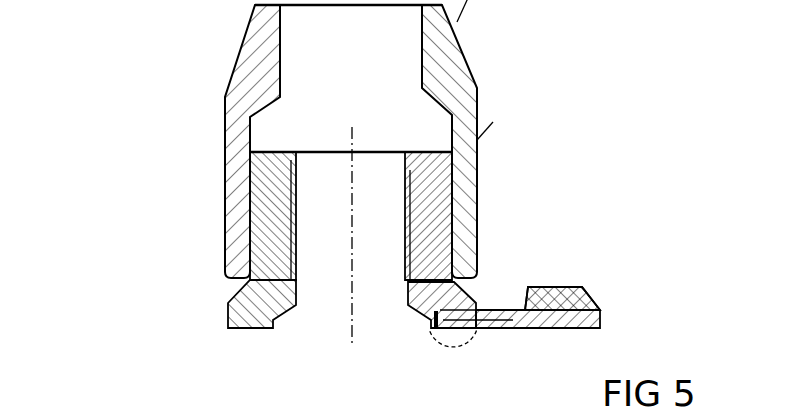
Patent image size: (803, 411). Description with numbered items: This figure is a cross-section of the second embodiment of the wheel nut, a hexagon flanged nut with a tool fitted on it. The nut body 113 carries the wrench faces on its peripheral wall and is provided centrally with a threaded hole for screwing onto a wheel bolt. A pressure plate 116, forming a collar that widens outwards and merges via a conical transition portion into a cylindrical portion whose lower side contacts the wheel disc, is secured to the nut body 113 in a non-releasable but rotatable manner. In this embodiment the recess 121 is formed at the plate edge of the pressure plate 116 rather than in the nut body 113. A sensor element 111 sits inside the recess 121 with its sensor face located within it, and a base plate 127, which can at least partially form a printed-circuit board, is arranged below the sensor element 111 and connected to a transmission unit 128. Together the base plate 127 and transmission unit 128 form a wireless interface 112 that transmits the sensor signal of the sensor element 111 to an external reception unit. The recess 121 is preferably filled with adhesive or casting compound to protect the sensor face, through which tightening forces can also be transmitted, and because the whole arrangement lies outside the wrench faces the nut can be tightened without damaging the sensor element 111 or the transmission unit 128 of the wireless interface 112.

The sensor element 111 is at (432, 317).
The wireless interface 112 is at (652, 285).
The nut body 113 is at (265, 226).
The pressure plate 116 is at (192, 307).
The recess 121 is at (472, 308).
The base plate 127 is at (562, 320).
The transmission unit 128 is at (557, 288).